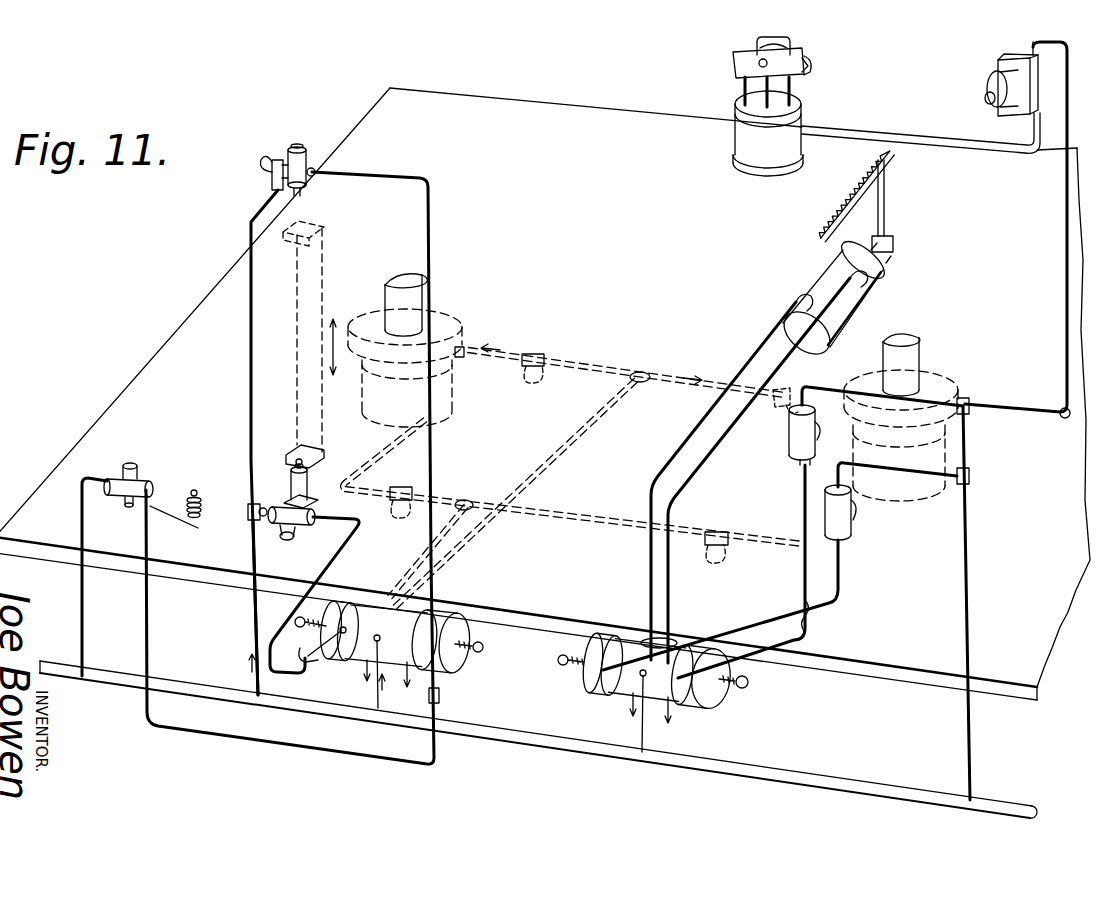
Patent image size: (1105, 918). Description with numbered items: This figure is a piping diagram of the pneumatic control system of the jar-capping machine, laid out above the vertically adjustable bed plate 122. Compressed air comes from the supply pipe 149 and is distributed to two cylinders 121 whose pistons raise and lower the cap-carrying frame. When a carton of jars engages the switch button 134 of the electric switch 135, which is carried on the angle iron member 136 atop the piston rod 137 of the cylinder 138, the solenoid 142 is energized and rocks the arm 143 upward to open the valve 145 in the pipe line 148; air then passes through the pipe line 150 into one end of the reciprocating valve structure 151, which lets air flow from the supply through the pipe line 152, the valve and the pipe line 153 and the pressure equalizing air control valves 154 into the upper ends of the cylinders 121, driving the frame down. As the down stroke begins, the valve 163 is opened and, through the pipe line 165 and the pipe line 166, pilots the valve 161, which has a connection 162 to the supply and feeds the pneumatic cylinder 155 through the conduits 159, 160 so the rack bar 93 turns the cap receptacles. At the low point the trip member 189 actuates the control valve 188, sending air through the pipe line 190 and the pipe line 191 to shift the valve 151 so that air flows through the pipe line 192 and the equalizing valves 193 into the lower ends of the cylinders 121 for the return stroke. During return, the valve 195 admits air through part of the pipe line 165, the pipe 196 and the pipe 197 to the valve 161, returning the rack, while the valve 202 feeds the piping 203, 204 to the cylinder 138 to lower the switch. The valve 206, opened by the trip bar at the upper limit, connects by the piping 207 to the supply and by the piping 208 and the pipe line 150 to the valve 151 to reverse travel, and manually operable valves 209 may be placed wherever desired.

The rack bar 93 is at (830, 205).
The cylinders 121 is at (925, 375).
The bed plate 122 is at (540, 117).
The switch button 134 is at (736, 65).
The electric switch 135 is at (757, 45).
The angle iron member 136 is at (810, 62).
The piston rod 137 is at (742, 92).
The cylinder 138 is at (748, 152).
The electric magnet or solenoid 142 is at (212, 500).
The arm 143 is at (158, 509).
The valve 145 is at (121, 503).
The pipe line 148 is at (80, 584).
The supply pipe 149 is at (127, 685).
The pipe line 150 is at (280, 741).
The reciprocating valve structure 151 is at (437, 610).
The pipe line 152 is at (372, 690).
The pipe line 153 is at (680, 380).
The pressure equalizing air control valves 154 is at (538, 386).
The pneumatic cylinder 155 is at (886, 282).
The conduit 159 is at (768, 332).
The conduit 160 is at (772, 372).
The valve 161 is at (718, 708).
The connection 162 is at (640, 730).
The valve 163 is at (799, 455).
The pipe line 165 is at (833, 385).
The pipe line 166 is at (805, 579).
The control valve 188 is at (316, 503).
The trip member 189 is at (297, 410).
The pipe line 190 is at (255, 623).
The pipe line 191 is at (330, 558).
The pipe line 192 is at (462, 500).
The pressure control air equalizing valves 193 is at (400, 518).
The valve 195 is at (852, 548).
The pipe 196 is at (928, 478).
The pipe 197 is at (772, 625).
The valve 202 is at (1000, 80).
The piping 203 is at (1066, 226).
The piping 204 is at (967, 151).
The valve 206 is at (304, 152).
The piping 207 is at (250, 342).
The piping 208 is at (432, 197).
The manually operable valves 209 is at (268, 186).